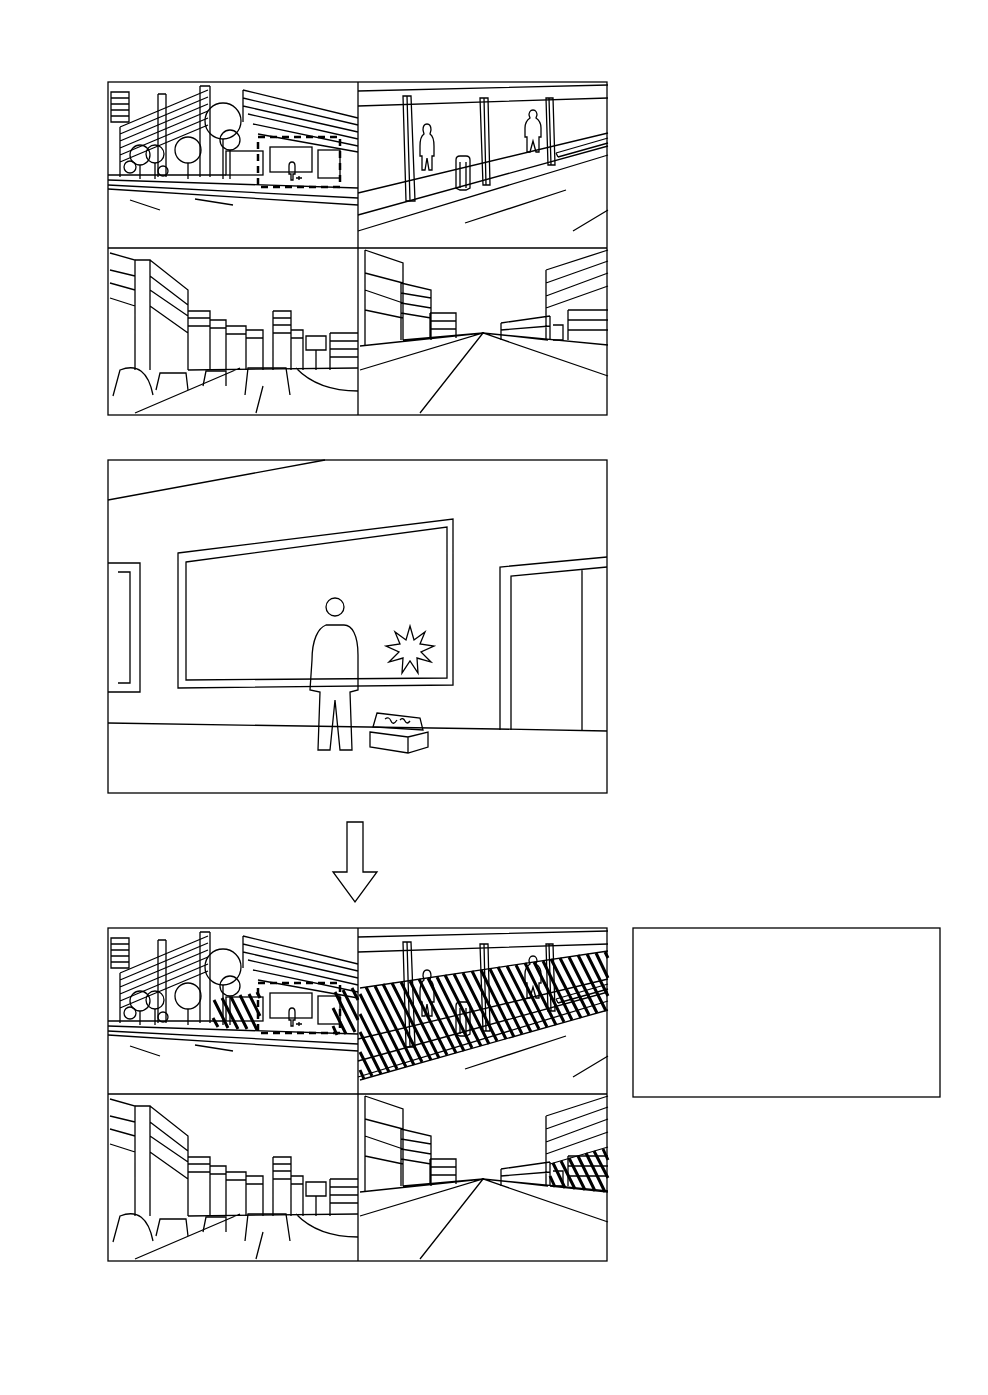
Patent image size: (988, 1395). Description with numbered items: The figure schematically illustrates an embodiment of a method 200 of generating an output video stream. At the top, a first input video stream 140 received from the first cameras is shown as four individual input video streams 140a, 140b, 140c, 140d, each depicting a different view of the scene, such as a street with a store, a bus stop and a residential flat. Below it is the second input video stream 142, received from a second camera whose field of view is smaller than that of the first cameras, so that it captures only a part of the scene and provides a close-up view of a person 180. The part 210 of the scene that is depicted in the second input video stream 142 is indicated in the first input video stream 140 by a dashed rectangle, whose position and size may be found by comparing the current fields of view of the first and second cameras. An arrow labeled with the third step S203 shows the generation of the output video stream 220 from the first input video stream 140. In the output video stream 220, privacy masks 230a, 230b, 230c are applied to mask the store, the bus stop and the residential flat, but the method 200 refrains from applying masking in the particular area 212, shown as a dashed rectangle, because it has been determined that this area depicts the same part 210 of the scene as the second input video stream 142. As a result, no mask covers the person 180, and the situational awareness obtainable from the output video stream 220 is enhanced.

The method of generating an output video stream 200 is at (122, 61).
The first input video stream 140 is at (607, 400).
The first input video stream 140a is at (117, 210).
The first input video stream 140b is at (601, 210).
The first input video stream 140c is at (601, 366).
The first input video stream 140d is at (120, 365).
The part of the scene depicted in the second input video stream 210 is at (297, 137).
The second input video stream 142 is at (607, 765).
The person 180 is at (322, 657).
The third step S203 is at (363, 843).
The output video stream 220 is at (607, 1235).
The particular area of the output video stream 212 is at (297, 983).
The privacy mask 230a is at (335, 1027).
The privacy mask 230b is at (430, 1045).
The privacy mask 230c is at (557, 1185).